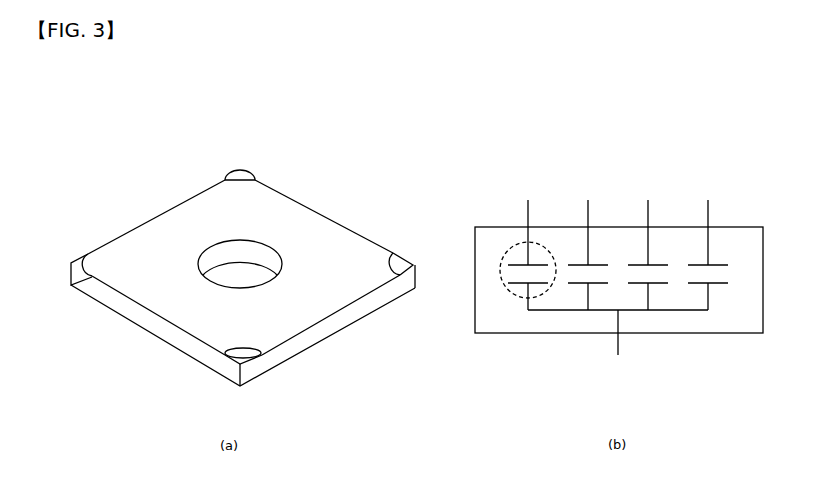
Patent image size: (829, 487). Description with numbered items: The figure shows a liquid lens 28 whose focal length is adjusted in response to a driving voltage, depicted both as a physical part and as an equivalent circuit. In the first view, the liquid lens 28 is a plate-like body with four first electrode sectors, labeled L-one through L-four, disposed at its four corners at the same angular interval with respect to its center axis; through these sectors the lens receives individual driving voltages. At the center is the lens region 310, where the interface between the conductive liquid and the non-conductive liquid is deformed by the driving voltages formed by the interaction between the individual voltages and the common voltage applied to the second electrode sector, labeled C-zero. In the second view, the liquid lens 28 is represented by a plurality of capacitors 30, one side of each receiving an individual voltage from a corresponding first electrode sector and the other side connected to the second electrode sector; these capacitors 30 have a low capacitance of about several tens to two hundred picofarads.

The liquid lens 28 is at (172, 312).
The capacitors 30 is at (508, 248).
The lens region 310 is at (237, 262).